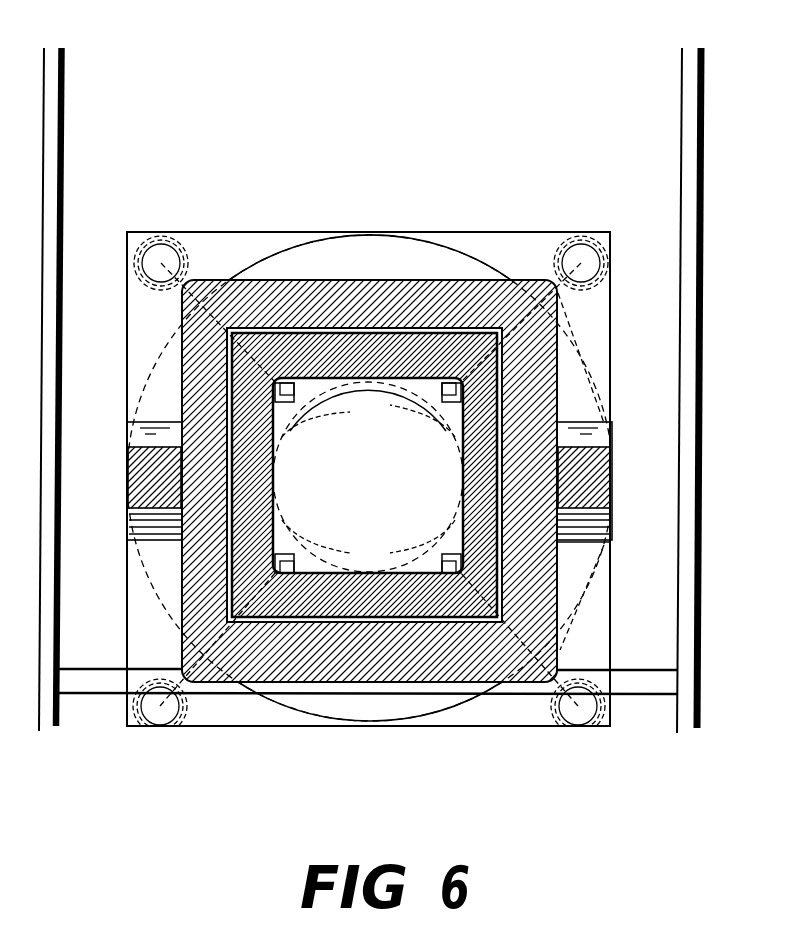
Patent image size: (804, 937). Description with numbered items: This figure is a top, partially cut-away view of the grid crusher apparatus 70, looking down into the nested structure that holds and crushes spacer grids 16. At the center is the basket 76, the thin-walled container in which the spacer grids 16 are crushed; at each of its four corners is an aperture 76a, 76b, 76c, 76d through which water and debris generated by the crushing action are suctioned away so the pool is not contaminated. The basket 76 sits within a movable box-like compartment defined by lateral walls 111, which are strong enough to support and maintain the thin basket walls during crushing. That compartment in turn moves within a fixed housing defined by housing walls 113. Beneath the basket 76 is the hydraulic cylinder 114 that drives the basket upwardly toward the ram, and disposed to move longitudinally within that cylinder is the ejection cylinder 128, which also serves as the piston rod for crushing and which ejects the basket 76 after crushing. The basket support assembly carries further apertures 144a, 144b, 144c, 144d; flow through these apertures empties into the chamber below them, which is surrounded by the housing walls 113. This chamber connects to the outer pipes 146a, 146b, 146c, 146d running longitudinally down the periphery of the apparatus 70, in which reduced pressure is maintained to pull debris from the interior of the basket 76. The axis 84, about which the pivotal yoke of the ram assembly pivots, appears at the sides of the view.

The grid crusher apparatus 70 is at (366, 92).
The spacer grids 16 is at (558, 384).
The basket 76 is at (368, 477).
The aperture 76a is at (290, 404).
The aperture 76b is at (452, 404).
The aperture 76c is at (452, 552).
The aperture 76d is at (292, 553).
The axis 84 is at (127, 482).
The lateral walls 111 is at (562, 588).
The housing walls 113 is at (558, 358).
The hydraulic cylinder 114 is at (590, 548).
The ejection cylinder 128 is at (378, 499).
The aperture 144a is at (298, 392).
The aperture 144b is at (440, 400).
The aperture 144c is at (442, 555).
The aperture 144d is at (296, 556).
The outer pipe 146a is at (161, 236).
The outer pipe 146b is at (590, 236).
The outer pipe 146c is at (557, 735).
The outer pipe 146d is at (172, 733).